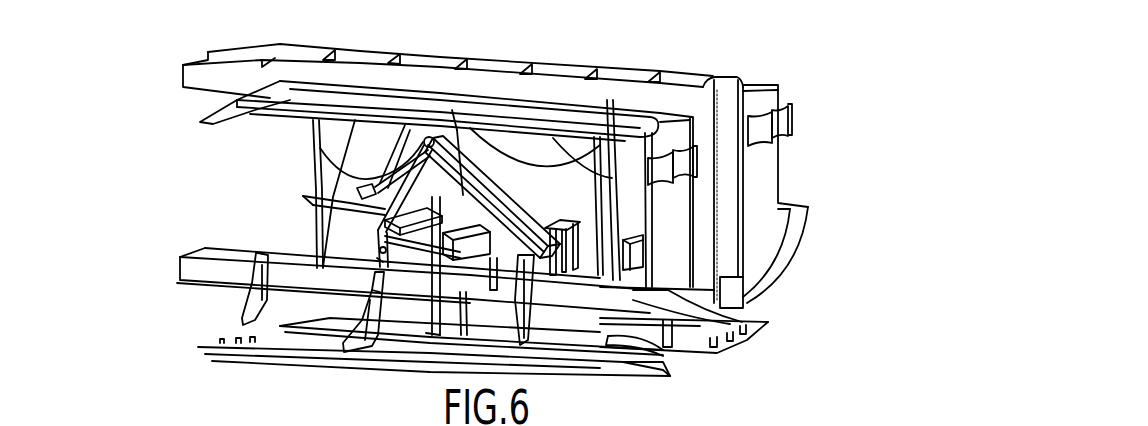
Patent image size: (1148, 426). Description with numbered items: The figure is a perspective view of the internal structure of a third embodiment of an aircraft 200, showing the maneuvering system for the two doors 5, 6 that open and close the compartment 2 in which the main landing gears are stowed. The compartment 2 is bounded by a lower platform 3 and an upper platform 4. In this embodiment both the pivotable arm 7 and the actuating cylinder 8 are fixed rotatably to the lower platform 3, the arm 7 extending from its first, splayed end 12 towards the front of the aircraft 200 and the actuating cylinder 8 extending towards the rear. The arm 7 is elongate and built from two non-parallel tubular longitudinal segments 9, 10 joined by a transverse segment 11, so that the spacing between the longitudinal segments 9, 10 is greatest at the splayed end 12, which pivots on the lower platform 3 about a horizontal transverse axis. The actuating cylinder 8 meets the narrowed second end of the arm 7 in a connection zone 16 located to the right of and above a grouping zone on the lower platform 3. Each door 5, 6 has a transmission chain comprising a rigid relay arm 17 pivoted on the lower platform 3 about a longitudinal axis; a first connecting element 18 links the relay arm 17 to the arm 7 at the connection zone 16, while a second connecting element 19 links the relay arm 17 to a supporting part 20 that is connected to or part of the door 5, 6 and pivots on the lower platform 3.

The aircraft 200 is at (188, 157).
The compartment 2 is at (513, 233).
The lower platform 3 is at (473, 232).
The upper platform 4 is at (463, 104).
The door 5 is at (599, 380).
The door 6 is at (748, 338).
The pivotable arm 7 is at (543, 183).
The actuating cylinder 8 is at (366, 184).
The longitudinal segment 9 is at (598, 205).
The longitudinal segment 10 is at (500, 268).
The transverse segment 11 is at (506, 207).
The first, splayed end 12 is at (553, 230).
The connection zone 16 is at (434, 140).
The relay arm 17 is at (383, 252).
The first connecting element 18 is at (426, 137).
The second connecting element 19 is at (377, 260).
The supporting part 20 is at (377, 293).